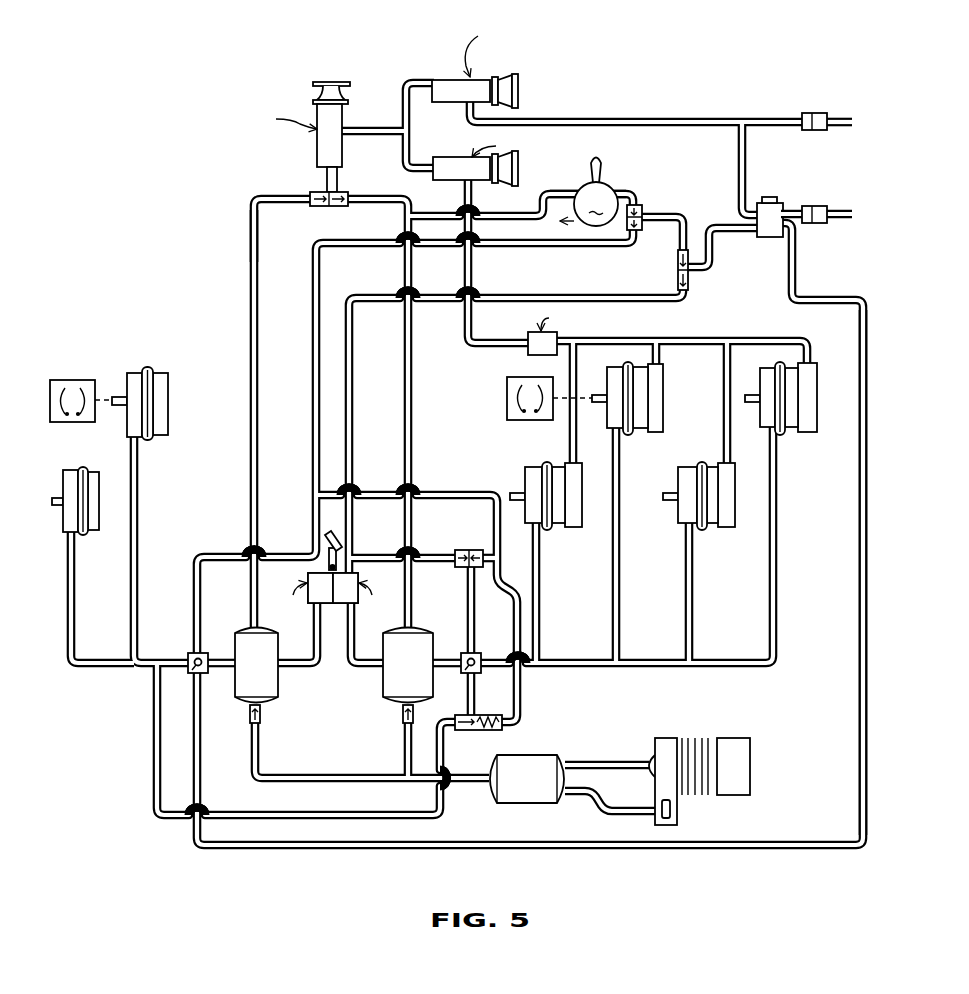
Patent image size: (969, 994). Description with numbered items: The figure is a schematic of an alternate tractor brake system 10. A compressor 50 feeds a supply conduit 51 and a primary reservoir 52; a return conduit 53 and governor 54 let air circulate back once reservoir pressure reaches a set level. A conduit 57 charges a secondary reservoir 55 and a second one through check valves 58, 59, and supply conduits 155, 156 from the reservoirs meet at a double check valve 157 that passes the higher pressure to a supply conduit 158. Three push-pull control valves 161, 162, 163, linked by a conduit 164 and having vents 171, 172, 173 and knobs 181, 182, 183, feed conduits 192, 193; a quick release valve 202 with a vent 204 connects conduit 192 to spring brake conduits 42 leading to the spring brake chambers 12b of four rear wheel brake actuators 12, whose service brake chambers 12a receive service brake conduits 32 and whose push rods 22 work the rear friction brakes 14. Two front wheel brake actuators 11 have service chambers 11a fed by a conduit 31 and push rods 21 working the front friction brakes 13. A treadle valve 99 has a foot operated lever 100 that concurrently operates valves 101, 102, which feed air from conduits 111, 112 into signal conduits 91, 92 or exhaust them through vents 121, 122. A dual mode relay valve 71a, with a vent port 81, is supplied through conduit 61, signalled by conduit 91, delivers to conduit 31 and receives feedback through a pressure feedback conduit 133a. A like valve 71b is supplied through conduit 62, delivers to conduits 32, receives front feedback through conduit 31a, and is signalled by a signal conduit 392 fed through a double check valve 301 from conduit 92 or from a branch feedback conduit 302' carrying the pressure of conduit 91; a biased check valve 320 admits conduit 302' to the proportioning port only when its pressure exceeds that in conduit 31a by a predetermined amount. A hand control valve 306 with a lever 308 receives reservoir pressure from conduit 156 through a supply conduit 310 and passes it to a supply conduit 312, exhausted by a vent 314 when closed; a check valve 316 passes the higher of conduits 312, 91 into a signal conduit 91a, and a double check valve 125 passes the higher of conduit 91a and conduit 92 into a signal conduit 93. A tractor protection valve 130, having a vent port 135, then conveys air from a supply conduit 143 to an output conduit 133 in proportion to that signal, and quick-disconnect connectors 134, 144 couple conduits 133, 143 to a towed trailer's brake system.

The tractor brake system 10 is at (247, 243).
The front wheel brake actuator 11 is at (83, 466).
The service chamber 11a is at (65, 531).
The rear wheel brake actuator 12 is at (630, 440).
The service brake chamber 12a is at (609, 374).
The spring brake chamber 12b is at (664, 432).
The front friction brake 13 is at (68, 380).
The rear friction brake 14 is at (507, 400).
The push rod 21 is at (57, 500).
The push rod 22 is at (598, 404).
The conduit 31 is at (104, 670).
The feedback conduit 31a is at (153, 729).
The service brake conduit 32 is at (612, 608).
The spring brake conduit 42 is at (622, 340).
The compressor 50 is at (736, 797).
The supply conduit 51 is at (593, 761).
The primary reservoir 52 is at (515, 803).
The return conduit 53 is at (601, 804).
The governor 54 is at (678, 820).
The secondary reservoir 55 is at (268, 696).
The conduit 57 is at (288, 784).
The check valve 58 is at (251, 718).
The check valve 59 is at (402, 718).
The supply conduit 61 is at (222, 658).
The supply conduit 62 is at (439, 655).
The dual mode relay valve 71a is at (190, 653).
The dual mode relay valve 71b is at (478, 653).
The vent port 81 is at (195, 675).
The signal conduit 91 is at (533, 247).
The signal conduit 91a is at (671, 216).
The signal conduit 92 is at (354, 425).
The signal conduit 93 is at (712, 267).
The treadle valve 99 is at (361, 578).
The foot operated lever 100 is at (328, 546).
The valve 101 is at (320, 588).
The valve 102 is at (345, 588).
The conduit 111 is at (290, 669).
The conduit 112 is at (373, 668).
The vent 121 is at (298, 595).
The vent 122 is at (370, 595).
The double check valve 125 is at (677, 270).
The tractor protection valve 130 is at (770, 252).
The output conduit 133 is at (797, 220).
The pressure feedback conduit 133a is at (860, 513).
The quick-disconnect pneumatic connector 134 is at (827, 212).
The vent port 135 is at (766, 196).
The supply conduit 143 is at (750, 120).
The quick-disconnect pneumatic connector 144 is at (818, 112).
The supply conduit 155 is at (249, 299).
The supply conduit 156 is at (413, 352).
The double check valve 157 is at (331, 208).
The supply conduit 158 is at (326, 184).
The push-pull control valve 161 is at (316, 144).
The push-pull control valve 162 is at (445, 158).
The push-pull control valve 163 is at (437, 80).
The conduit 164 is at (388, 126).
The vent 171 is at (280, 116).
The vent 172 is at (496, 144).
The vent 173 is at (483, 46).
The push-pull knob 181 is at (330, 80).
The push-pull knob 182 is at (518, 171).
The push-pull knob 183 is at (514, 84).
The conduit 192 is at (473, 272).
The conduit 193 is at (617, 120).
The quick release valve 202 is at (558, 340).
The vent 204 is at (535, 330).
The double check valve 301 is at (466, 548).
The branch feedback conduit 302' is at (449, 582).
The hand control valve 306 is at (596, 204).
The lever 308 is at (604, 164).
The supply conduit 310 is at (489, 218).
The supply conduit 312 is at (636, 191).
The vent 314 is at (562, 224).
The check valve 316 is at (643, 210).
The biased check valve 320 is at (500, 732).
The signal conduit 392 is at (466, 597).